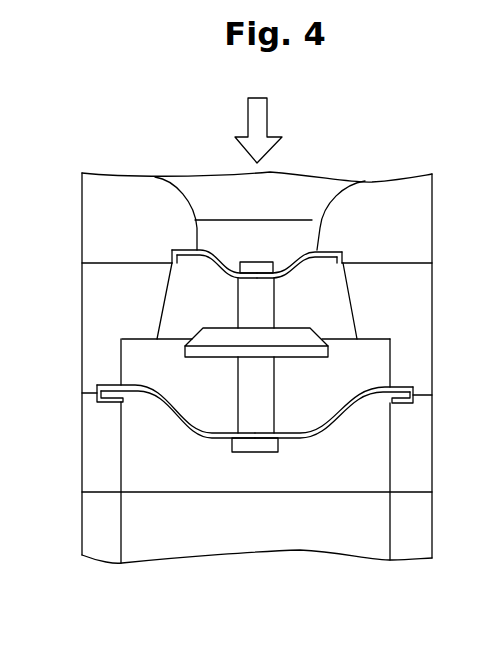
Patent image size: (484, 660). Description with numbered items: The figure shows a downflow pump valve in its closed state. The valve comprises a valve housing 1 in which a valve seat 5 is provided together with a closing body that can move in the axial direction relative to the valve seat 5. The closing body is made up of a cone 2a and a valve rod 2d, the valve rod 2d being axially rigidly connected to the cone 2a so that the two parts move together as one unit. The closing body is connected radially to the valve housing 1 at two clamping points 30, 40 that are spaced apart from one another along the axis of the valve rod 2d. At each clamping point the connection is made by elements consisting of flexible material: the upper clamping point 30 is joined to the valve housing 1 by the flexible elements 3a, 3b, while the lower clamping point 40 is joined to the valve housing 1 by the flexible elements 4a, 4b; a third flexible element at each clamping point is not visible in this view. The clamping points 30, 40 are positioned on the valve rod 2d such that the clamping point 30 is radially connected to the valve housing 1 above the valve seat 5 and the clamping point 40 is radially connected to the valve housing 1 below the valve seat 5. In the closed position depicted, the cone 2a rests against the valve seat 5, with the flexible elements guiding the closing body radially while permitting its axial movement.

The valve housing 1 is at (93, 293).
The valve seat 5 is at (170, 313).
The element consisting of flexible material 3a is at (306, 250).
The element consisting of flexible material 3b is at (206, 250).
The clamping point 30 is at (258, 262).
The valve rod 2d is at (258, 402).
The cone 2a is at (203, 336).
The clamping point 40 is at (265, 452).
The element consisting of flexible material 4a is at (320, 428).
The element consisting of flexible material 4b is at (182, 416).